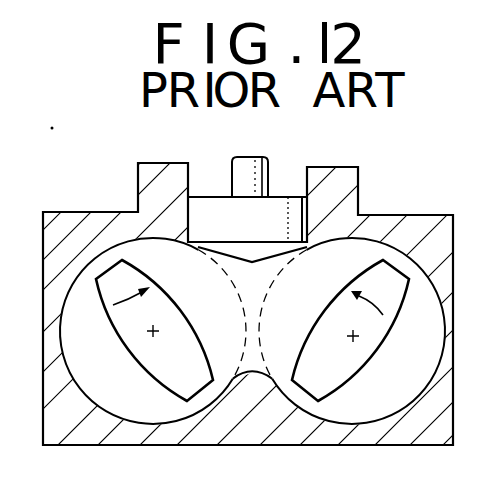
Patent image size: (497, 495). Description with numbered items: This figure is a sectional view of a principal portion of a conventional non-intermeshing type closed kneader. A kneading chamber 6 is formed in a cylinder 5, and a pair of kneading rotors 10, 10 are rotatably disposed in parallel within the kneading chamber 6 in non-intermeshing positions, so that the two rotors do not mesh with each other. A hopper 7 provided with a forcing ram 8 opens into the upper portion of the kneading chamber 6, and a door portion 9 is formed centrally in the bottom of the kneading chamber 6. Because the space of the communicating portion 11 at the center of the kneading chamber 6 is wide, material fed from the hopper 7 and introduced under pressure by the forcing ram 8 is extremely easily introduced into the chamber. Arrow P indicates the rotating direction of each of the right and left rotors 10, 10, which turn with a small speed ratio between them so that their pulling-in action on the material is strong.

The cylinder 5 is at (43, 212).
The kneading chamber 6 is at (148, 248).
The hopper 7 is at (285, 184).
The forcing ram 8 is at (296, 207).
The door portion 9 is at (252, 383).
The kneading rotors 10 is at (97, 348).
The communicating portion 11 is at (372, 222).
The arrow indicating rotating direction P is at (102, 290).